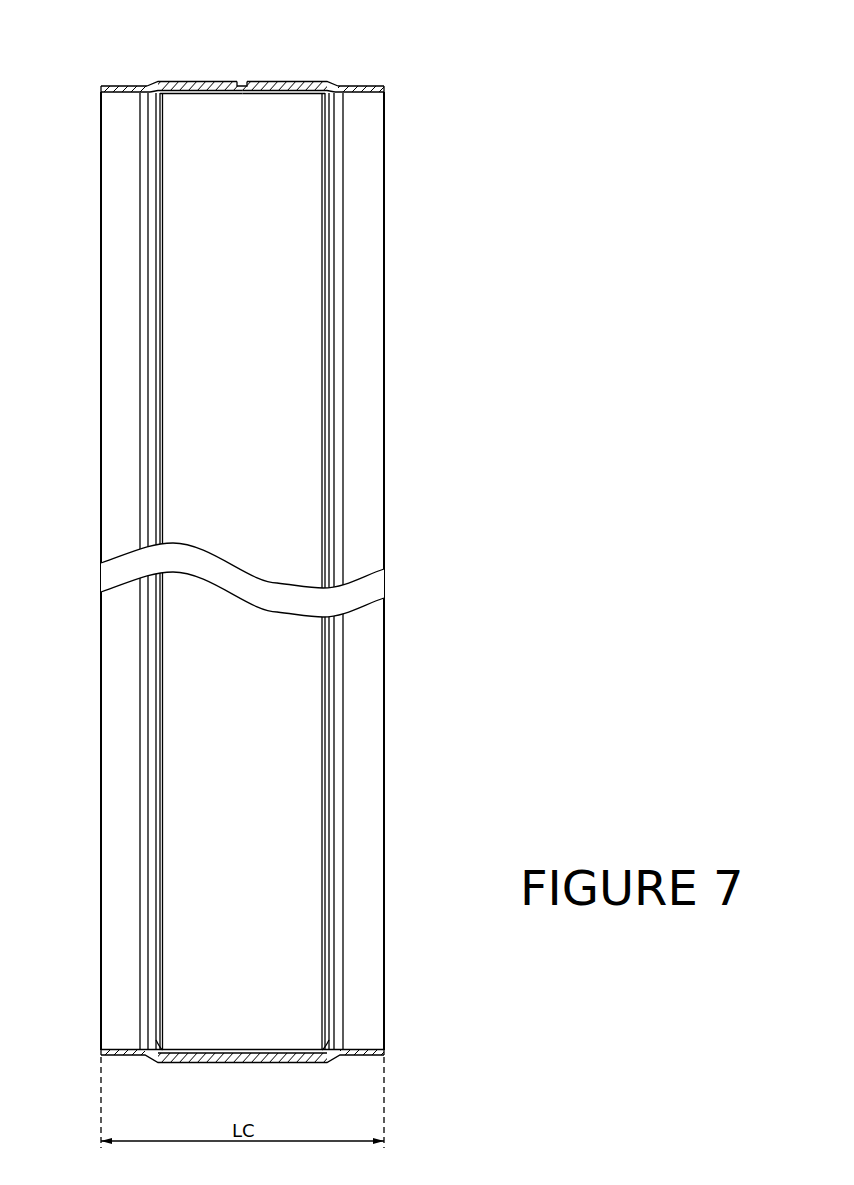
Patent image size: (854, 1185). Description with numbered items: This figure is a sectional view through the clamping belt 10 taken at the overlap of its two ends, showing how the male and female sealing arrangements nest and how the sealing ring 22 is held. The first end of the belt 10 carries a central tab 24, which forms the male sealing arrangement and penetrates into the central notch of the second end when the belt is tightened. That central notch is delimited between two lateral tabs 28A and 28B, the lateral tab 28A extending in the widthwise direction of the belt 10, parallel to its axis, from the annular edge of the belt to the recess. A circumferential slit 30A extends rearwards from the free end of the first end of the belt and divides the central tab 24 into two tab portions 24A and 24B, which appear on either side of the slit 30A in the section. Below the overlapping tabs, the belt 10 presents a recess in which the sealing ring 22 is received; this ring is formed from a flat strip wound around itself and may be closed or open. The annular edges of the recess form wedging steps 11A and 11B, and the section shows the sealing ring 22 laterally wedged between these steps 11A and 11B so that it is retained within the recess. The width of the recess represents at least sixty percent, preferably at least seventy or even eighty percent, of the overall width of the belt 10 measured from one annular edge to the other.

The belt 10 is at (373, 497).
The sealing ring 22 is at (190, 773).
The central tab 24 is at (240, 56).
The tab portion 24A is at (280, 81).
The tab portion 24B is at (200, 81).
The circumferential slit 30A is at (242, 81).
The lateral tab 28A is at (360, 85).
The lateral tab 28B is at (105, 85).
The wedging step 11A is at (327, 1040).
The wedging step 11B is at (158, 1040).